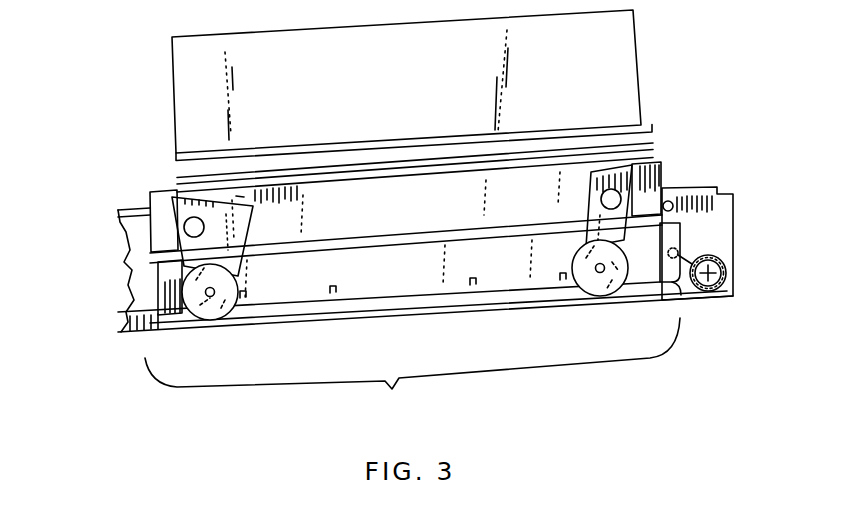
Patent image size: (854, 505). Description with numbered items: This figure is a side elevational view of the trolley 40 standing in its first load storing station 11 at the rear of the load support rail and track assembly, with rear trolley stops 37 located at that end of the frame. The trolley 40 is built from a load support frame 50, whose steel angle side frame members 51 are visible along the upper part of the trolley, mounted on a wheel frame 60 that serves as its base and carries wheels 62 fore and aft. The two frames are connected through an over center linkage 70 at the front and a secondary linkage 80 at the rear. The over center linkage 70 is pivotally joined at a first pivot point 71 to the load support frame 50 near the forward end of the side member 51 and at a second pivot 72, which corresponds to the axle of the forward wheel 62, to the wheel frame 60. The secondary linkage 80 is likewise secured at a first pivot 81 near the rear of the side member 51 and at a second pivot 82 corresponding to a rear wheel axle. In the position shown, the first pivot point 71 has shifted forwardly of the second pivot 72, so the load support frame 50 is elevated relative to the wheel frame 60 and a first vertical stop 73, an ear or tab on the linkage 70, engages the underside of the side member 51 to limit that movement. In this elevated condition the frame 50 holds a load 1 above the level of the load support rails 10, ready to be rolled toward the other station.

The load 1 is at (438, 103).
The load support rails 10 is at (110, 200).
The first load storing station 11 is at (425, 358).
The rear trolley stops 37 is at (715, 208).
The trolley 40 is at (718, 164).
The load support frame 50 is at (446, 221).
The side frame members 51 is at (300, 187).
The wheel frame 60 is at (375, 284).
The wheels 62 is at (192, 320).
The over center linkage 70 is at (157, 258).
The first pivot point 71 is at (188, 218).
The second pivot 72 is at (206, 294).
The first vertical stop 73 is at (240, 197).
The secondary linkage 80 is at (593, 218).
The first pivot 81 is at (613, 195).
The second pivot 82 is at (583, 298).